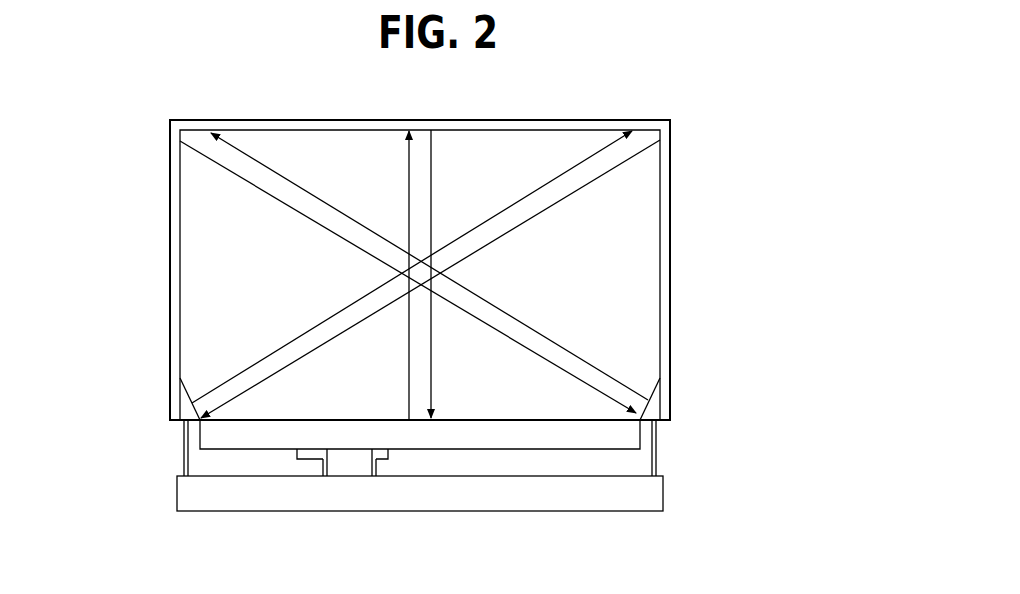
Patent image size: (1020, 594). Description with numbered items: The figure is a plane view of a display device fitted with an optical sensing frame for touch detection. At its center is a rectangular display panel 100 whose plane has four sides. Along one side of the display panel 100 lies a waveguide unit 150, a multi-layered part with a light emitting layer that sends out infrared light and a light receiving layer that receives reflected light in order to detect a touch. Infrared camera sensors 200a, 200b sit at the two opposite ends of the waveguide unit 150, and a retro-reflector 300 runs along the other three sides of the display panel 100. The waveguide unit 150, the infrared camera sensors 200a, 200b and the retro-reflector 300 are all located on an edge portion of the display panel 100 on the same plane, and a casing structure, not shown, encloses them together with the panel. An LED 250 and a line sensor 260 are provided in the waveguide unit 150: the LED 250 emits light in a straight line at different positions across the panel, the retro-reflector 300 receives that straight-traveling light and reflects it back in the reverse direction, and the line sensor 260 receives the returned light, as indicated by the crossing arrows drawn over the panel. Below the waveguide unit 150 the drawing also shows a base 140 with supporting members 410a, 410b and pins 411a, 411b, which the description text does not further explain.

The display panel 100 is at (633, 249).
The base 140 is at (637, 505).
The waveguide unit 150 is at (577, 435).
The infrared camera sensor 200a is at (679, 404).
The infrared camera sensor 200b is at (167, 409).
The LED 250 is at (382, 468).
The line sensor 260 is at (303, 468).
The retro-reflector 300 is at (666, 161).
The first support post 410a is at (656, 450).
The second support post 410b is at (184, 452).
The first coupling pin 411a is at (374, 463).
The second coupling pin 411b is at (325, 463).